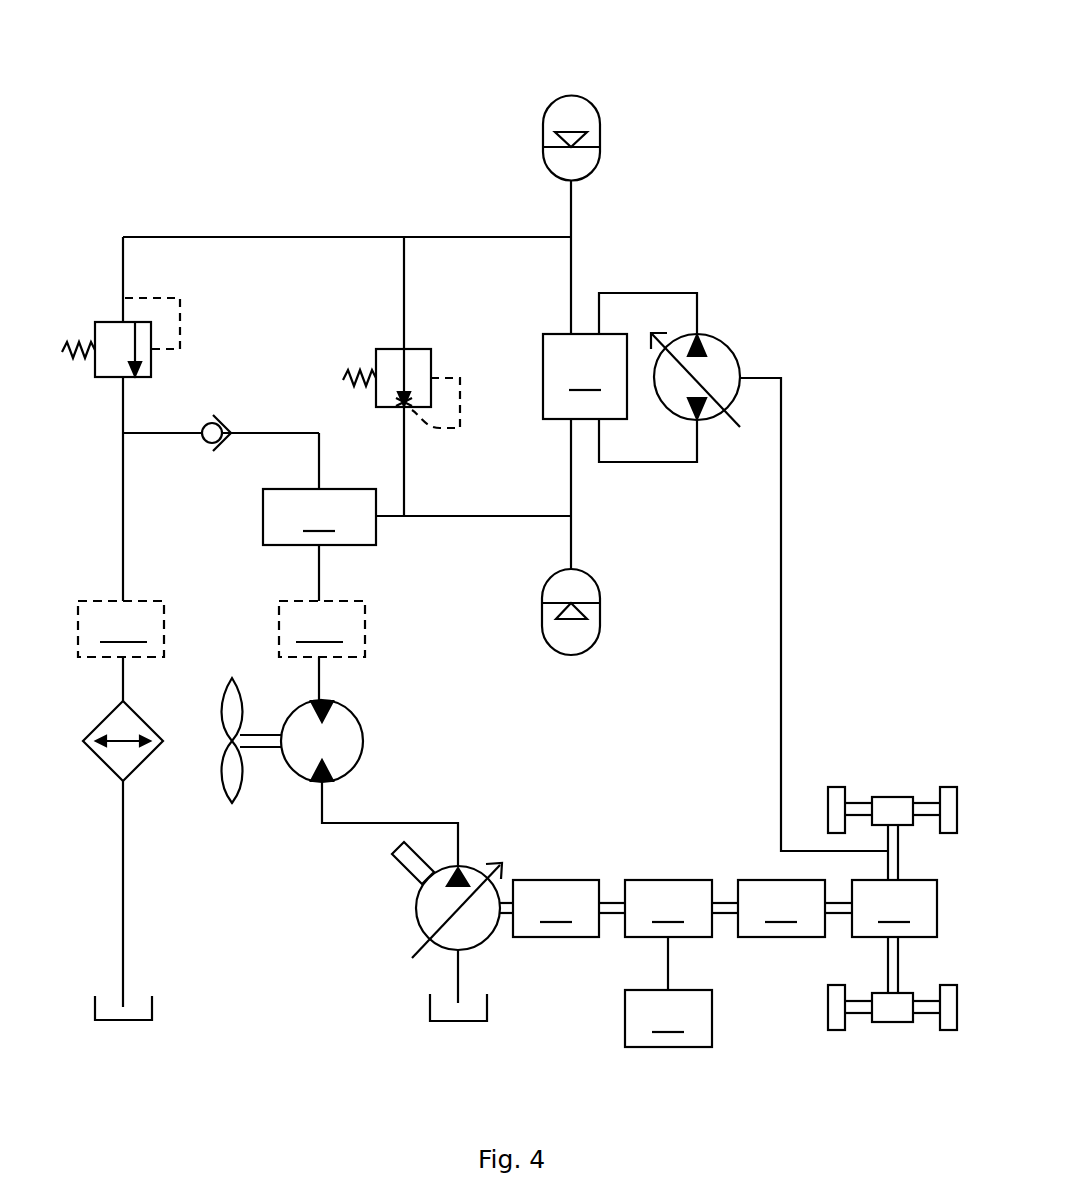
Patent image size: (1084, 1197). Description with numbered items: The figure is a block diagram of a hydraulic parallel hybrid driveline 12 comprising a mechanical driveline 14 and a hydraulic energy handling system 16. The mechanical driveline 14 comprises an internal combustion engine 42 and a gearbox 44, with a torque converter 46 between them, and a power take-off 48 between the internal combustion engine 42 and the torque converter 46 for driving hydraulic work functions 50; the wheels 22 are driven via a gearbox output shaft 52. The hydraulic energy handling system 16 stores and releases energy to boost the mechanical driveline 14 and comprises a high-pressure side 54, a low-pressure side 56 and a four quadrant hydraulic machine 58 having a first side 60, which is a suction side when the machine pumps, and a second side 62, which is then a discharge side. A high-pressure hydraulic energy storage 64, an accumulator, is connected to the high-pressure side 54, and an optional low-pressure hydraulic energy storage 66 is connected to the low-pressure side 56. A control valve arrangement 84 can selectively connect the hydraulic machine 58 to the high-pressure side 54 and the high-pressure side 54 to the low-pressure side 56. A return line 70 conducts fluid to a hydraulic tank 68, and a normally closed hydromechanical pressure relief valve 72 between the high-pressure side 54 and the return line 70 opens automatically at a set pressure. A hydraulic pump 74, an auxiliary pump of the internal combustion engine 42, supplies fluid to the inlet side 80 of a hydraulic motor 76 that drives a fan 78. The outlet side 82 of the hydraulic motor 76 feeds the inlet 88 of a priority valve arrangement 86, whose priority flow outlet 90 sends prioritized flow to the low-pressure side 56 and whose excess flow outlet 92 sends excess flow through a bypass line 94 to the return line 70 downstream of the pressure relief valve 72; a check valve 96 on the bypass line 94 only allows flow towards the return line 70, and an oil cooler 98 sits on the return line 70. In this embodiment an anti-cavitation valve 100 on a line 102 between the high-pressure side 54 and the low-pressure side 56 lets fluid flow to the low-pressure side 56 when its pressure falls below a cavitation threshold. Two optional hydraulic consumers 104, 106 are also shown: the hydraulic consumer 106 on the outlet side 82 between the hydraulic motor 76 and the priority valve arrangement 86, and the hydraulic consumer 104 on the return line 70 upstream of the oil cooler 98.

The hydraulic parallel hybrid driveline 12 is at (863, 128).
The mechanical driveline 14 is at (663, 797).
The hydraulic energy handling system 16 is at (699, 210).
The wheels 22 is at (834, 787).
The internal combustion engine 42 is at (549, 908).
The gearbox 44 is at (881, 908).
The torque converter 46 is at (768, 908).
The power take-off 48 is at (655, 908).
The hydraulic work functions 50 is at (668, 992).
The gearbox output shaft 52 is at (898, 870).
The high-pressure side 54 is at (483, 237).
The low-pressure side 56 is at (470, 517).
The hydraulic machine 58 is at (739, 348).
The first side 60 is at (702, 420).
The second side 62 is at (702, 337).
The high-pressure hydraulic energy storage 64 is at (583, 96).
The low-pressure hydraulic energy storage 66 is at (583, 571).
The hydraulic tank 68 is at (122, 1021).
The return line 70 is at (123, 495).
The pressure relief valve 72 is at (112, 322).
The hydraulic pump 74 is at (415, 906).
The hydraulic motor 76 is at (365, 745).
The fan 78 is at (232, 702).
The inlet side 80 is at (322, 808).
The outlet side 82 is at (322, 691).
The control valve arrangement 84 is at (585, 403).
The priority valve arrangement 86 is at (319, 517).
The inlet 88 is at (318, 548).
The priority flow outlet 90 is at (380, 519).
The excess flow outlet 92 is at (318, 488).
The bypass line 94 is at (280, 433).
The check valve 96 is at (222, 422).
The oil cooler 98 is at (102, 762).
The anti-cavitation valve 100 is at (413, 349).
The line 102 is at (404, 320).
The hydraulic consumer 104 is at (121, 629).
The hydraulic consumer 106 is at (322, 650).